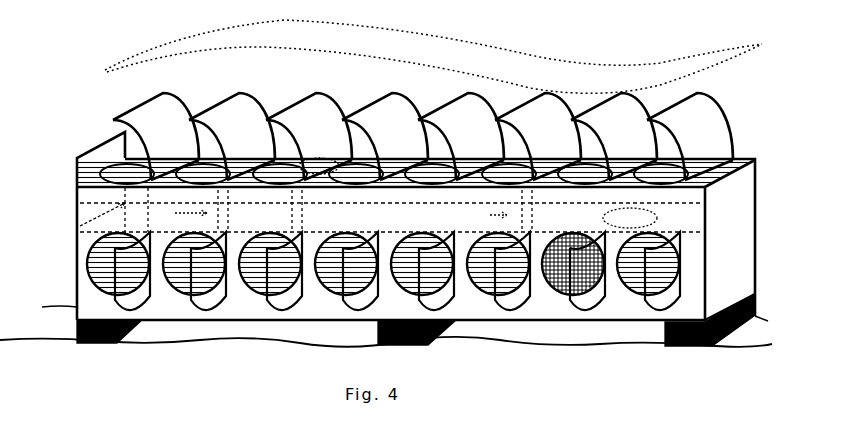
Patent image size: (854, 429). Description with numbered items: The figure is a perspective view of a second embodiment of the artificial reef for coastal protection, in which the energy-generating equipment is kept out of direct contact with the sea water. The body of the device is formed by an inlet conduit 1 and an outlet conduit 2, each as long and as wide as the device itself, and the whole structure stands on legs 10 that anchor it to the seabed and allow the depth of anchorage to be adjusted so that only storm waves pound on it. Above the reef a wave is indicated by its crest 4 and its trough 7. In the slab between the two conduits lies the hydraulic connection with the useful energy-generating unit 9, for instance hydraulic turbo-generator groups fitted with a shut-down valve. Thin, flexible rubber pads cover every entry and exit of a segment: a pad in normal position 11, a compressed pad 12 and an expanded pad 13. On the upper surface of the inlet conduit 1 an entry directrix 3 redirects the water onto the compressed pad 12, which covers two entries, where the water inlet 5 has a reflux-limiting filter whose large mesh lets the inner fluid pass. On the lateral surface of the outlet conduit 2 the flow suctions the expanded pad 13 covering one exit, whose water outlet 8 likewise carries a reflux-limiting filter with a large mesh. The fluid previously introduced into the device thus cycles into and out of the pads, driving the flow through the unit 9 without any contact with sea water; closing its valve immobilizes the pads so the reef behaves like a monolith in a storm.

The inlet conduit 1 is at (753, 205).
The outlet conduit 2 is at (399, 217).
The entry directrix 3 is at (423, 136).
The wave's crest 4 is at (287, 48).
The water inlet provided with a reflux-limiting filter 5 is at (312, 146).
The wave's trough 7 is at (589, 89).
The water outlet provided with a reflux-limiting filter 8 is at (558, 308).
The useful energy-generating unit with shut-down valve 9 is at (664, 225).
The device's leg 10 is at (137, 334).
The pad in normal position 11 is at (102, 260).
The compressed pad 12 is at (341, 263).
The expanded pad 13 is at (542, 325).